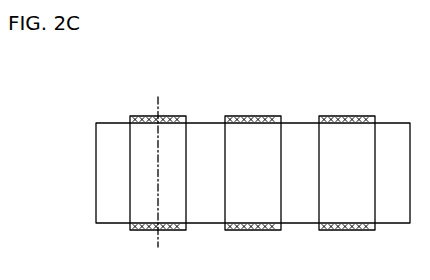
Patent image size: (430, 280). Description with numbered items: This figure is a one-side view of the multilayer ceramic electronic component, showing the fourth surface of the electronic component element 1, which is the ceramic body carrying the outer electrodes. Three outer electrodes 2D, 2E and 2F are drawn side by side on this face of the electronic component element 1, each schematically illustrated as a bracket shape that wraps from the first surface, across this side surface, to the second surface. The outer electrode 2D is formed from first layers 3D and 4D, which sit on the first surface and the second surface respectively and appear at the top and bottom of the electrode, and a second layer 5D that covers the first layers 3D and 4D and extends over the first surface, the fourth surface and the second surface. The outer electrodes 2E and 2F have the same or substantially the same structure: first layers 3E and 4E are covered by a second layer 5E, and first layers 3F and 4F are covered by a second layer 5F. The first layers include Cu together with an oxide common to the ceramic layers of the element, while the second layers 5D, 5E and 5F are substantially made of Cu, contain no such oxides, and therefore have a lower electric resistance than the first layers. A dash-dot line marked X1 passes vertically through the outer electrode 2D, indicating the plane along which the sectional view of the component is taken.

The electronic component element 1 is at (386, 181).
The line X1- X1 is at (157, 102).
The outer electrode 2D is at (207, 73).
The first layer 3D is at (172, 115).
The first layer 4D is at (130, 222).
The second layer 5D is at (168, 155).
The outer electrode 2E is at (295, 73).
The first layer 3E is at (250, 116).
The first layer 4E is at (226, 222).
The second layer 5E is at (263, 155).
The outer electrode 2F is at (390, 73).
The first layer 3F is at (343, 117).
The first layer 4F is at (320, 222).
The second layer 5F is at (357, 155).